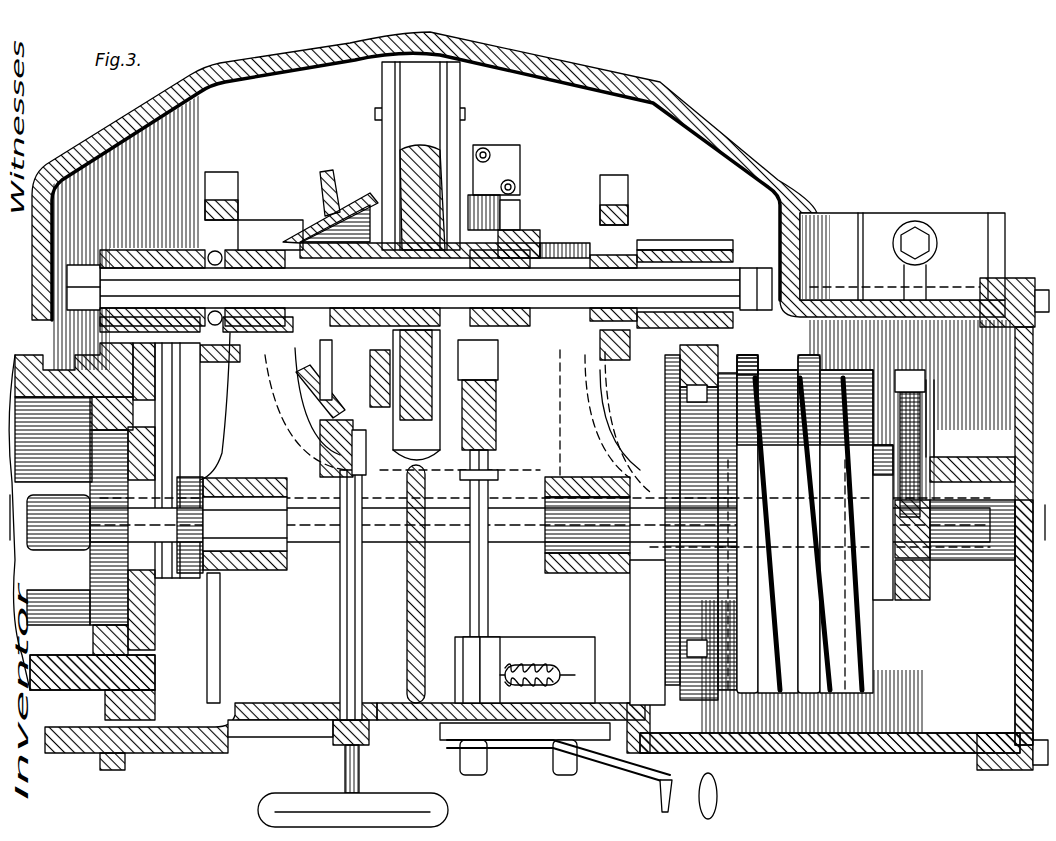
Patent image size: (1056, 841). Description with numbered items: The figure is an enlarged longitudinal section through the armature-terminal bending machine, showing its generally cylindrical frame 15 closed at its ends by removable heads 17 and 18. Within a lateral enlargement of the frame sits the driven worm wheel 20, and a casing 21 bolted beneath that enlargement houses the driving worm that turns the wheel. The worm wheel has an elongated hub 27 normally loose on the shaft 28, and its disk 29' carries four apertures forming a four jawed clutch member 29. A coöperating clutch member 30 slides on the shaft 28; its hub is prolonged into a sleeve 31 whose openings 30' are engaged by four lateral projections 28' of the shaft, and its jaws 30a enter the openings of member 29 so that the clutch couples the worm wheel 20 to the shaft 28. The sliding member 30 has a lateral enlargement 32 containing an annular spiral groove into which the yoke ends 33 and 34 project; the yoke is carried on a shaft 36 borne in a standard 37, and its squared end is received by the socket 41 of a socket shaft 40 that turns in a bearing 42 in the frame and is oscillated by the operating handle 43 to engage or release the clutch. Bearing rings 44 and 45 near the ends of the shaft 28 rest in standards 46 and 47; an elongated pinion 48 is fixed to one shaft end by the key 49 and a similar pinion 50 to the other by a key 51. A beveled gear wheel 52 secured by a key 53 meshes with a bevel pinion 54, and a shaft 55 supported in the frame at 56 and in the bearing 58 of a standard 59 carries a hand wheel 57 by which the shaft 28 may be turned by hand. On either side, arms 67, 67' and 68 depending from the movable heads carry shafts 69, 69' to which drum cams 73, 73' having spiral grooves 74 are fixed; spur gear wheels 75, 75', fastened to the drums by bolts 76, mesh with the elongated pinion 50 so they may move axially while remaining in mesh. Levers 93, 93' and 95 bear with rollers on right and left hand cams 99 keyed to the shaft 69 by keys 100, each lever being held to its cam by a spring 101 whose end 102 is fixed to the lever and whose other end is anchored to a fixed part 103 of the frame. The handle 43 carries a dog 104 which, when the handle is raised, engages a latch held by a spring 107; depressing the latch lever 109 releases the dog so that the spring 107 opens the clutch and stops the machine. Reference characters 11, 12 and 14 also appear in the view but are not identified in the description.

The spindle 11 is at (450, 108).
The shaft axis 12 is at (576, 170).
The lower shaft end 14 is at (11, 515).
The frame 15 is at (852, 753).
The removable head 17 is at (1047, 520).
The removable head 18 is at (1022, 613).
The driven worm wheel 20 is at (478, 150).
The casing 21 is at (390, 103).
The elongated hub 27 is at (348, 200).
The shaft 28 is at (640, 264).
The lateral projections 28' is at (651, 279).
The four jawed clutch member 29 is at (457, 267).
The disk 29' is at (498, 146).
The coöperating clutch member 30 is at (529, 213).
The coöperating clutch members 30a is at (420, 288).
The openings 30' is at (558, 412).
The sleeve 31 is at (615, 240).
The lateral enlargement 32 is at (522, 228).
The yoke end 33 is at (502, 287).
The yoke end 34 is at (507, 200).
The shaft 36 is at (540, 170).
The standard 37 is at (497, 420).
The socket shaft 40 is at (488, 544).
The socket 41 is at (460, 478).
The bearing 42 is at (480, 675).
The operating handle 43 is at (612, 770).
The bearing ring 44 is at (245, 210).
The bearing ring 45 is at (645, 258).
The standard 46 is at (220, 172).
The standard 47 is at (614, 200).
The elongated pinion 48 is at (130, 248).
The key 49 is at (148, 245).
The pinion 50 is at (700, 250).
The key 51 is at (660, 275).
The beveled gear wheel 52 is at (330, 185).
The key 53 is at (262, 245).
The bevel pinion 54 is at (320, 428).
The shaft 55 is at (340, 576).
The support 56 is at (338, 718).
The hand wheel 57 is at (290, 793).
The bearing 58 is at (340, 455).
The standard 59 is at (320, 400).
The arm 67 is at (617, 422).
The arm 67' is at (214, 590).
The arm 68 is at (960, 462).
The shaft 69 is at (508, 521).
The shaft 69' is at (245, 544).
The drum cam 73 is at (821, 512).
The drum cam 73' is at (148, 411).
The spiral groove 74 is at (755, 368).
The spur gear wheel 75 is at (661, 528).
The spur gear wheel 75' is at (95, 718).
The bolts 76 is at (687, 393).
The lever 93 is at (649, 632).
The lever 93' is at (152, 541).
The lever 95 is at (925, 603).
The cams 99 is at (883, 445).
The key 100 is at (560, 648).
The spring 101 is at (922, 415).
The spring end 102 is at (920, 528).
The fixed part 103 is at (925, 375).
The dog 104 is at (525, 640).
The spring 107 is at (540, 668).
The latch lever 109 is at (718, 795).